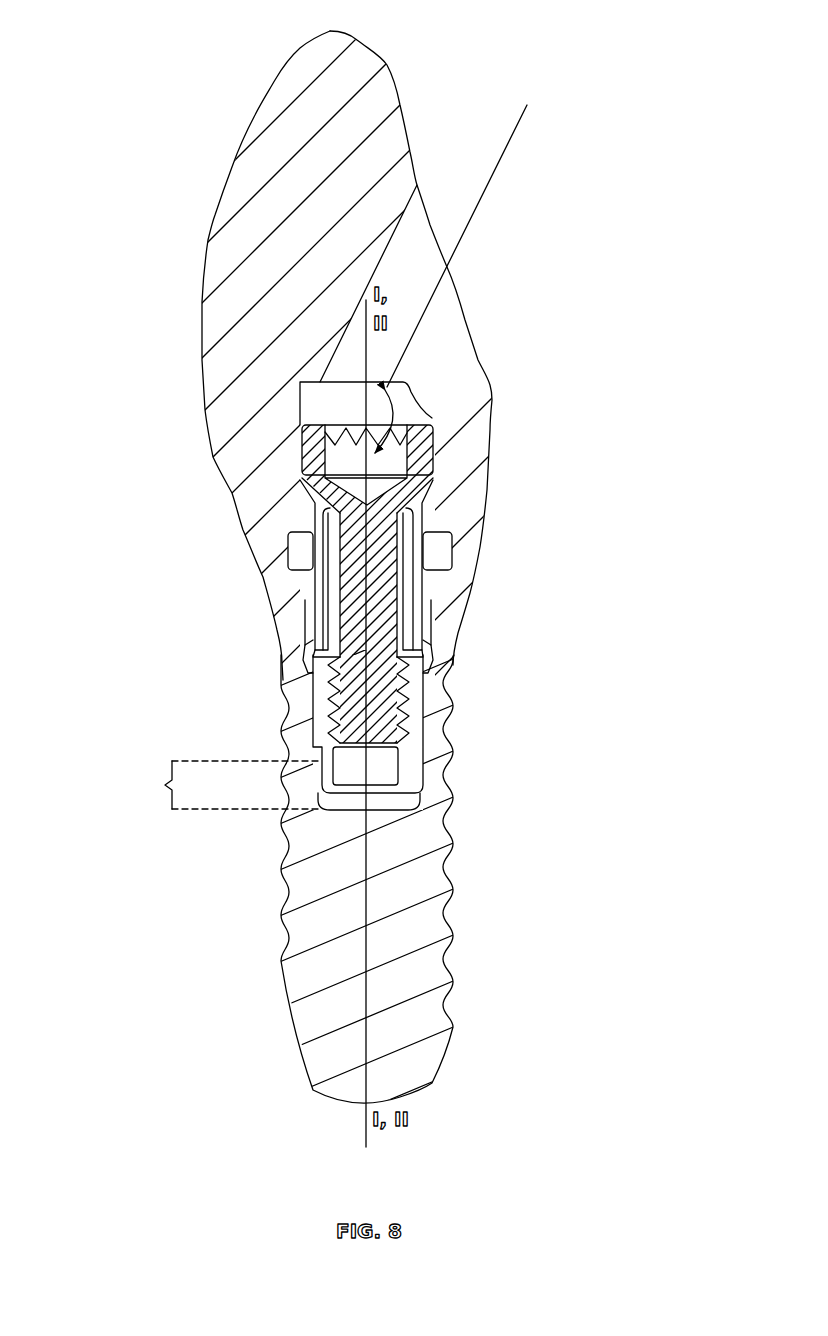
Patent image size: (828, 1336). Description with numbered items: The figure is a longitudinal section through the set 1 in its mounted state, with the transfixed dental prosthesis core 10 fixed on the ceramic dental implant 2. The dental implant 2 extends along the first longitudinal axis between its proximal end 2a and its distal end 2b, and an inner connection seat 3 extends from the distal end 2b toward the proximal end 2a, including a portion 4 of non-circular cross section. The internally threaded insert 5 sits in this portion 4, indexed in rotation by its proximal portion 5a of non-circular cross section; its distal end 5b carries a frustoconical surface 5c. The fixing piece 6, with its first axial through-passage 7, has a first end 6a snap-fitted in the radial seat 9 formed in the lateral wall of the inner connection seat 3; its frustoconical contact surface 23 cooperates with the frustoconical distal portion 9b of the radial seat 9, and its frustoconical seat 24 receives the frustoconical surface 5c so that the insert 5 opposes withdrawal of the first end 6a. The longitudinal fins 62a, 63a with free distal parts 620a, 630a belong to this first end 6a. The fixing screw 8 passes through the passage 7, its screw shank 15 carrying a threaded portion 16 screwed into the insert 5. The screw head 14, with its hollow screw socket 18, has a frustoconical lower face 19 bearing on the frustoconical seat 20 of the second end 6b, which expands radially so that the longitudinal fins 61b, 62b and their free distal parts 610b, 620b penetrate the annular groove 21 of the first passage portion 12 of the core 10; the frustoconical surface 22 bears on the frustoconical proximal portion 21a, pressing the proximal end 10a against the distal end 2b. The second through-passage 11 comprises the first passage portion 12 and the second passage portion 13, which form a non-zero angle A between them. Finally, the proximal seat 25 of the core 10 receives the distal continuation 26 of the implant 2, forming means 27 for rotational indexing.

The set 1 is at (585, 741).
The dental implant 2 is at (466, 915).
The proximal end 2a is at (322, 1057).
The distal end 2b is at (473, 580).
The inner connection seat 3 is at (330, 612).
The portion of non-circular cross section 4 is at (233, 785).
The internally threaded insert 5 is at (383, 599).
The proximal portion of non-circular cross section 5a is at (320, 777).
The distal end of the internally threaded insert 5b is at (335, 715).
The frustoconical surface 5c is at (330, 685).
The fixing piece 6 is at (305, 562).
The first end of the fixing piece 6a is at (310, 625).
The second end of the fixing piece 6b is at (465, 448).
The first axial through-passage 7 is at (433, 552).
The fixing screw 8 is at (293, 457).
The radial seat 9 is at (432, 641).
The frustoconical distal portion of the radial seat 9b is at (437, 628).
The transfixed dental prosthesis core 10 is at (234, 132).
The proximal end of the dental prosthesis core 10a is at (218, 573).
The second through-passage 11 is at (350, 360).
The first passage portion 12 is at (302, 512).
The second passage portion 13 is at (447, 337).
The screw head 14 is at (300, 412).
The screw shank 15 is at (320, 588).
The threaded portion 16 is at (415, 703).
The hollow screw socket 18 is at (338, 442).
The frustoconical lower face 19 is at (320, 490).
The frustoconical seat 20 is at (335, 468).
The annular groove 21 is at (460, 497).
The frustoconical proximal portion of the annular groove 21a is at (445, 507).
The frustoconical surface 22 is at (305, 515).
The frustoconical contact surface 23 is at (320, 645).
The frustoconical seat 24 is at (335, 693).
The proximal seat 25 is at (308, 563).
The distal continuation 26 is at (435, 545).
The means for rotational indexing 27 is at (549, 528).
The longitudinal fin 61b is at (315, 530).
The longitudinal fin 62a is at (442, 590).
The longitudinal fin 62b is at (440, 520).
The longitudinal fin 63a is at (310, 600).
The free distal part 610b is at (312, 496).
The free distal part 620a is at (428, 677).
The free distal part 620b is at (448, 498).
The free distal part 630a is at (305, 658).
The non-zero angle A is at (432, 418).